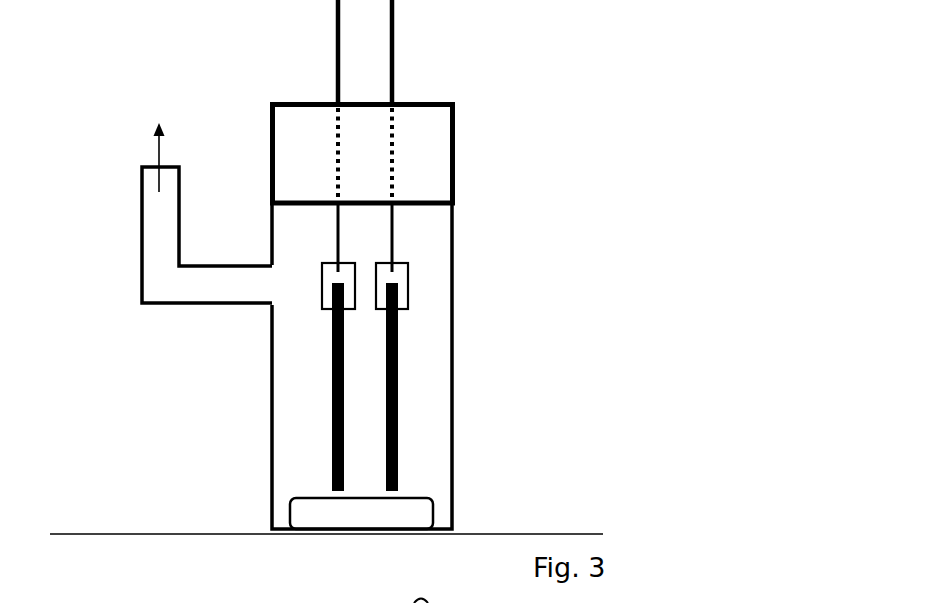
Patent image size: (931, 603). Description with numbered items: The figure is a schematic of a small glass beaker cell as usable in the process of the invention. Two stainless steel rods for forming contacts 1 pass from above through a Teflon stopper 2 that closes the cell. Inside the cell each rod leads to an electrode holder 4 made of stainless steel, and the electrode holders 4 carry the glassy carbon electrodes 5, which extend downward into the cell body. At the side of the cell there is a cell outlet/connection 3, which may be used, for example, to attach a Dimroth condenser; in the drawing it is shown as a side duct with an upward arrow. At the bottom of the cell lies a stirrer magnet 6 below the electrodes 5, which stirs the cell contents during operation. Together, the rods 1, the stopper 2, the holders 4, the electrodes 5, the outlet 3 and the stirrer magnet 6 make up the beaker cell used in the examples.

The stainless steel rod 1 is at (394, 21).
The Teflon stopper 2 is at (455, 153).
The cell outlet/connection 3 is at (142, 217).
The electrode holders 4 is at (408, 286).
The glassy carbon electrodes 5 is at (398, 387).
The stirrer magnet 6 is at (433, 513).